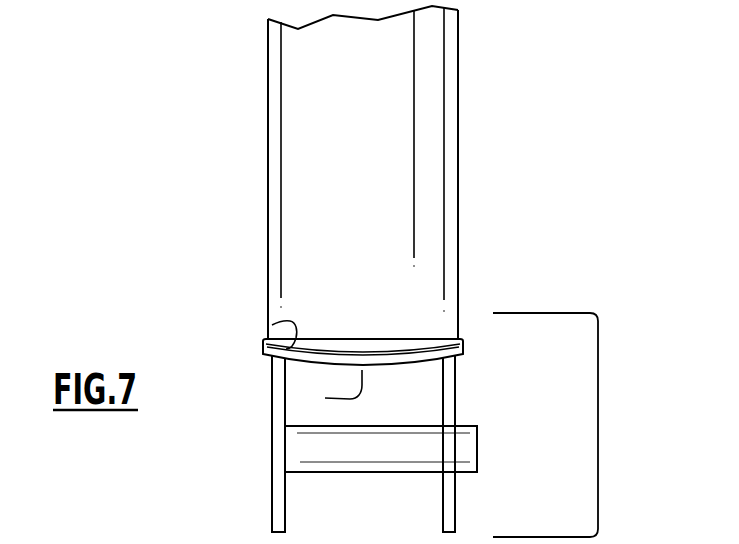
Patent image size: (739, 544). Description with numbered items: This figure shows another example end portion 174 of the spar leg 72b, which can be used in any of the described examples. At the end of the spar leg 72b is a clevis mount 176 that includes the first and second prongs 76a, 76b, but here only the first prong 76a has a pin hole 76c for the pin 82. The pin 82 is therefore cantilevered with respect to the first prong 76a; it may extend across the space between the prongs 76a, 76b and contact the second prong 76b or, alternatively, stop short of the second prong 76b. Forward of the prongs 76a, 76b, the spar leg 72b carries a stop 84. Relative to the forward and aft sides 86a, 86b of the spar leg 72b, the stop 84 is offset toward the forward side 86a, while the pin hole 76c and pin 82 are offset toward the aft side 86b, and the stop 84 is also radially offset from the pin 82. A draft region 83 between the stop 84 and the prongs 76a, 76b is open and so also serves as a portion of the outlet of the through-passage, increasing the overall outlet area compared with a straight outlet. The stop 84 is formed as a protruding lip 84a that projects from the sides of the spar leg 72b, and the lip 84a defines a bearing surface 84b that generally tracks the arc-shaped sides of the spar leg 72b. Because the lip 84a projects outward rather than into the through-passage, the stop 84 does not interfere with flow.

The spar leg 72b is at (466, 158).
The forward side 86a is at (268, 243).
The aft side 86b is at (460, 193).
The draft region 83 is at (404, 396).
The stop 84 is at (315, 377).
The protruding lip 84a is at (272, 325).
The bearing surface 84b is at (325, 398).
The end portion 174 is at (598, 428).
The clevis mount 176 is at (468, 397).
The pin 82 is at (478, 440).
The first prong 76a is at (448, 509).
The second prong 76b is at (278, 513).
The pin hole 76c is at (460, 473).